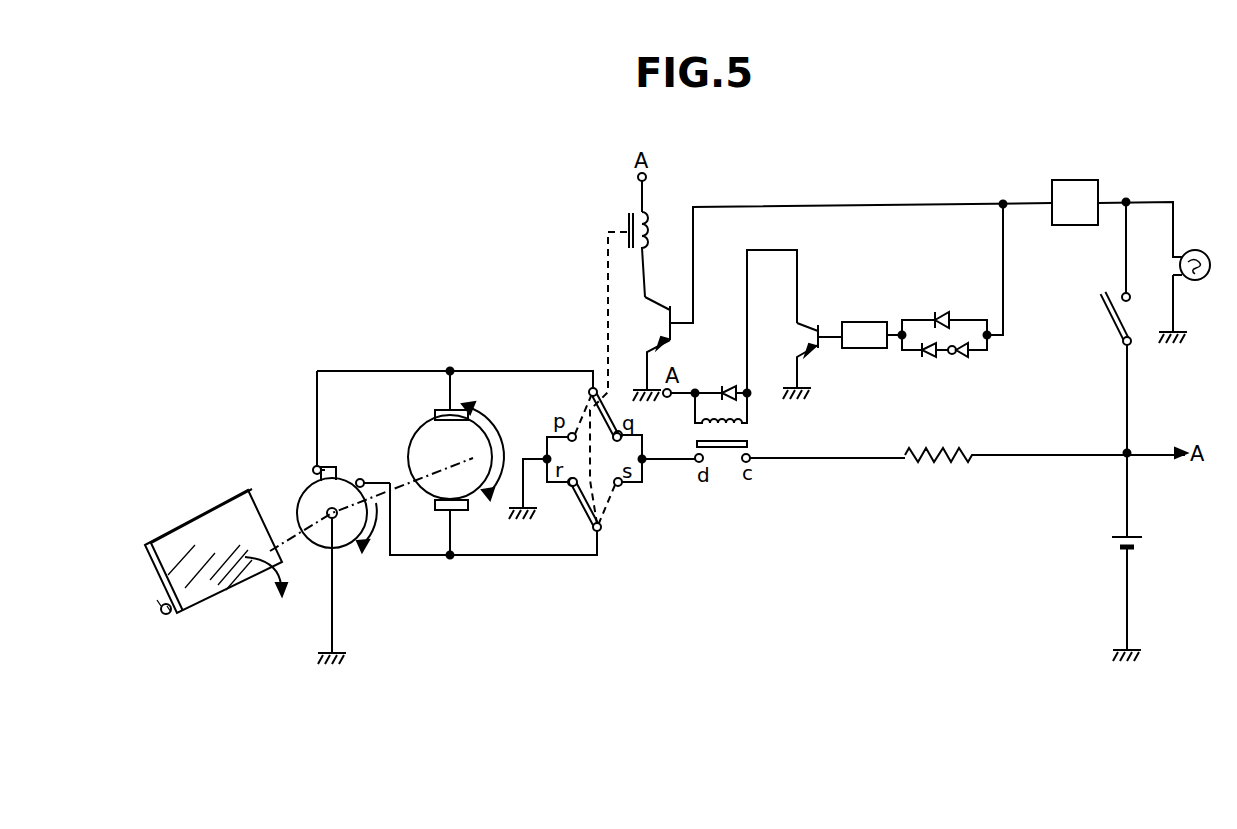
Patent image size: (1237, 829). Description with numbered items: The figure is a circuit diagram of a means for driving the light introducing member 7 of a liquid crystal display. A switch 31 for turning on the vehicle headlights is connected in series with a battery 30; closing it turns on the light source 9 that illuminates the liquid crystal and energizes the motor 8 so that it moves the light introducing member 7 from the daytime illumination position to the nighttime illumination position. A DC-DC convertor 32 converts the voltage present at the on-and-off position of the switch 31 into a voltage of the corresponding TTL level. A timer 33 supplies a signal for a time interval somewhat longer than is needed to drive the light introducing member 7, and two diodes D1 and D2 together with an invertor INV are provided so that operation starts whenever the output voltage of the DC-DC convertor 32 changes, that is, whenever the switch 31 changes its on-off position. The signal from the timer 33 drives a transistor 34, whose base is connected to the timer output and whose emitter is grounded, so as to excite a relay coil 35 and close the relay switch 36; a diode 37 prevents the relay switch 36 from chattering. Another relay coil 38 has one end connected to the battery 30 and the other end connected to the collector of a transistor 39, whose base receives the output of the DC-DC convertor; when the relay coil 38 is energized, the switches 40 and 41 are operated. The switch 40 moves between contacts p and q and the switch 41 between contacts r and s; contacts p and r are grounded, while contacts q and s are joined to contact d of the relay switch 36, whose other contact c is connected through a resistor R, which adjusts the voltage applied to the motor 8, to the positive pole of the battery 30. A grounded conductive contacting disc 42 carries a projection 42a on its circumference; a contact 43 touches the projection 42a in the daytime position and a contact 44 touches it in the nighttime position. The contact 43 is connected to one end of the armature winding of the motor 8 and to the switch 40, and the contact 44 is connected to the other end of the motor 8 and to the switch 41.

The light introducing member 7 is at (185, 540).
The motor 8 is at (473, 458).
The light source 9 is at (1210, 257).
The battery 30 is at (1148, 542).
The switch 31 is at (1112, 318).
The DC-DC convertor 32 is at (1073, 178).
The timer 33 is at (867, 322).
The transistor 34 is at (812, 353).
The relay coil 35 is at (753, 423).
The relay switch 36 is at (722, 448).
The diode 37 is at (729, 383).
The relay coil 38 is at (645, 228).
The transistor 39 is at (648, 322).
The switch 40 is at (600, 392).
The switch 41 is at (580, 507).
The conductive contacting disc 42 is at (322, 545).
The projection 42a is at (335, 468).
The contact 43 is at (313, 468).
The contact 44 is at (363, 479).
The diode D1 is at (942, 312).
The diode D2 is at (927, 363).
The invertor INV is at (967, 358).
The resistor R is at (935, 475).